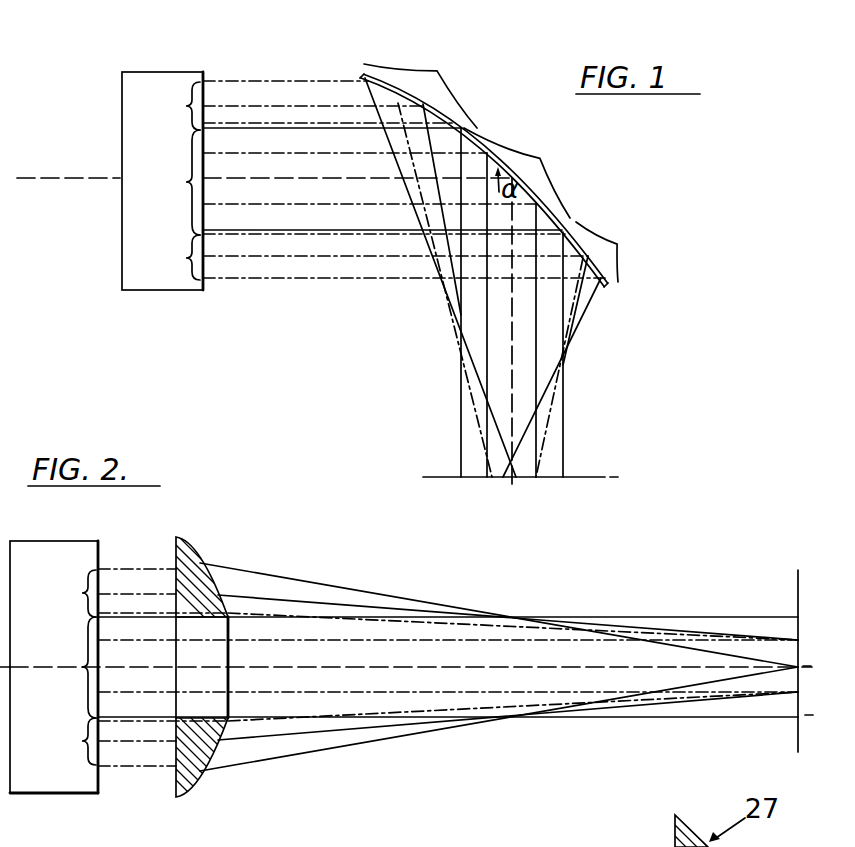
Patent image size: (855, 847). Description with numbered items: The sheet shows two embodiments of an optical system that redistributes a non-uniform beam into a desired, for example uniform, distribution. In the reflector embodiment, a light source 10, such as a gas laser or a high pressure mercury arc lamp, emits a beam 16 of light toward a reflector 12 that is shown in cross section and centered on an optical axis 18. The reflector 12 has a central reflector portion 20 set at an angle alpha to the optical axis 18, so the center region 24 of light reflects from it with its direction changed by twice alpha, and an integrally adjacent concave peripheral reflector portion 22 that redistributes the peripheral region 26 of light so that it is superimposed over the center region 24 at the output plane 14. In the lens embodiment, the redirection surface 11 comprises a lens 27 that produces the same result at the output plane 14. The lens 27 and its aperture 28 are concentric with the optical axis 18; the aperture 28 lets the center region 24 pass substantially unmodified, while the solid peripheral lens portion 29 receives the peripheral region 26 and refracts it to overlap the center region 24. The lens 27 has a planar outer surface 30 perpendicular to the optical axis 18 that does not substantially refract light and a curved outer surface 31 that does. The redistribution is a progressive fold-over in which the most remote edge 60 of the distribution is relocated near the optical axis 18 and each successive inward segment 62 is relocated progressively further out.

In FIG. 1, the light source 10 is at (137, 72).
In FIG. 2, the light source 10 is at (38, 541).
In FIG. 1, the redirection surface 11 is at (386, 88).
In FIG. 2, the redirection surface 11 is at (218, 588).
In FIG. 1, the reflector 12 is at (494, 100).
In FIG. 1, the output plane 14 is at (583, 477).
In FIG. 2, the output plane 14 is at (799, 593).
In FIG. 1, the beam 16 is at (300, 167).
In FIG. 2, the beam 16 is at (117, 657).
In FIG. 1, the optical axis 18 is at (373, 180).
In FIG. 2, the optical axis 18 is at (474, 667).
In FIG. 1, the central reflector portion 20 is at (521, 173).
In FIG. 1, the peripheral reflector portion 22 is at (509, 163).
In FIG. 1, the center region of light 24 is at (170, 182).
In FIG. 2, the center region of light 24 is at (66, 667).
In FIG. 1, the peripheral region of light 26 is at (173, 181).
In FIG. 2, the peripheral region of light 26 is at (68, 667).
In FIG. 2, the lens 27 is at (213, 544).
In FIG. 2, the aperture 28 is at (210, 632).
In FIG. 2, the solid peripheral lens portion 29 is at (203, 580).
In FIG. 2, the planar outer surface 30 is at (178, 800).
In FIG. 2, the curved outer surface 31 is at (200, 773).
In FIG. 2, the most remote edge 60 is at (158, 568).
In FIG. 2, the light segments 62 is at (112, 587).